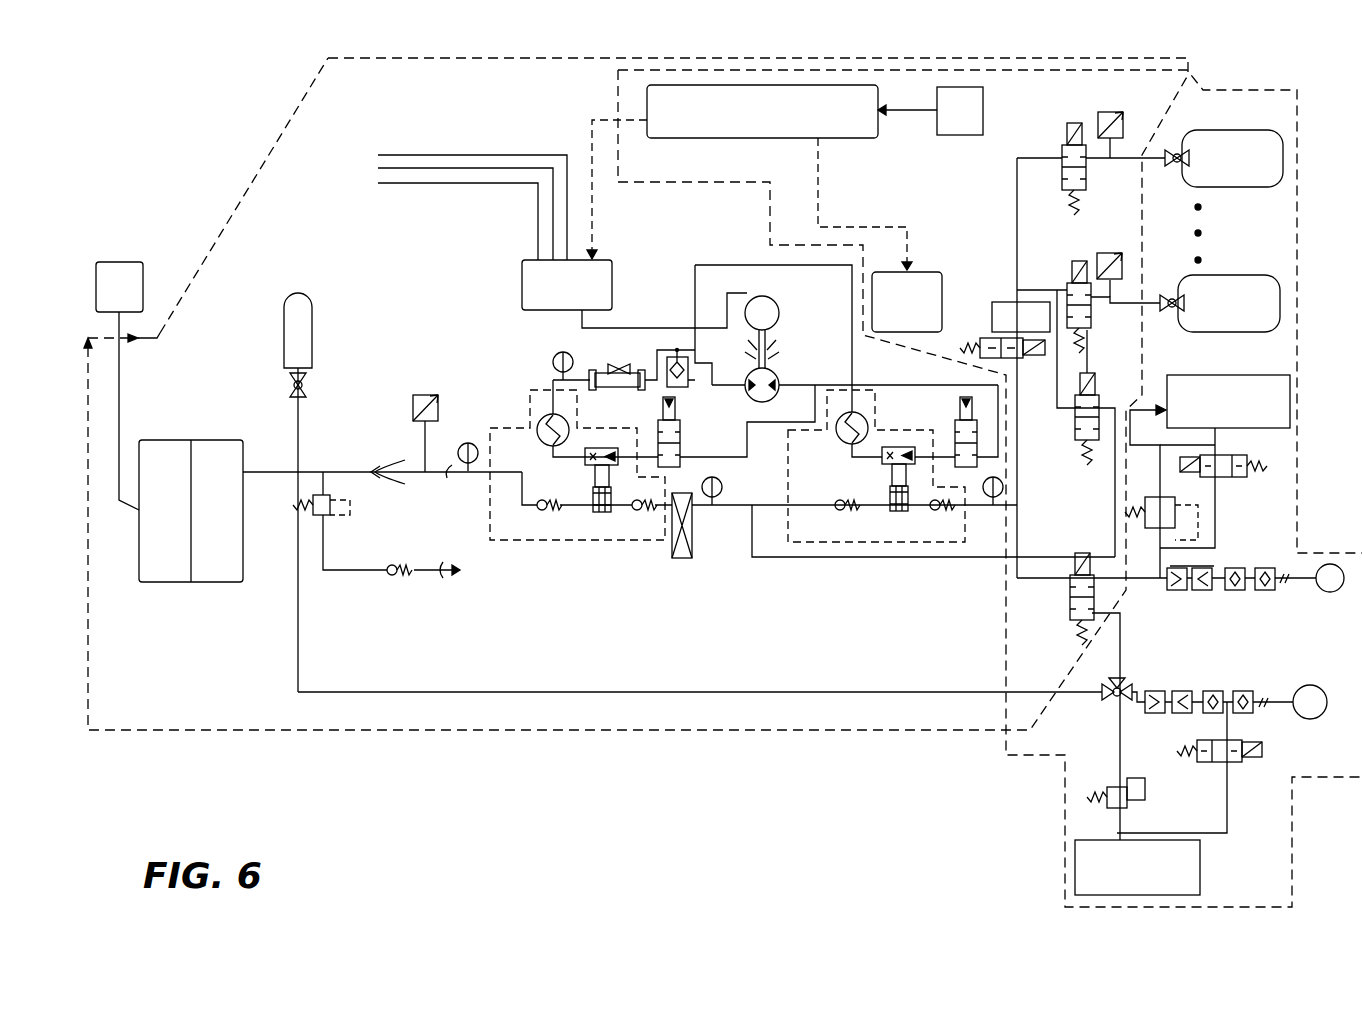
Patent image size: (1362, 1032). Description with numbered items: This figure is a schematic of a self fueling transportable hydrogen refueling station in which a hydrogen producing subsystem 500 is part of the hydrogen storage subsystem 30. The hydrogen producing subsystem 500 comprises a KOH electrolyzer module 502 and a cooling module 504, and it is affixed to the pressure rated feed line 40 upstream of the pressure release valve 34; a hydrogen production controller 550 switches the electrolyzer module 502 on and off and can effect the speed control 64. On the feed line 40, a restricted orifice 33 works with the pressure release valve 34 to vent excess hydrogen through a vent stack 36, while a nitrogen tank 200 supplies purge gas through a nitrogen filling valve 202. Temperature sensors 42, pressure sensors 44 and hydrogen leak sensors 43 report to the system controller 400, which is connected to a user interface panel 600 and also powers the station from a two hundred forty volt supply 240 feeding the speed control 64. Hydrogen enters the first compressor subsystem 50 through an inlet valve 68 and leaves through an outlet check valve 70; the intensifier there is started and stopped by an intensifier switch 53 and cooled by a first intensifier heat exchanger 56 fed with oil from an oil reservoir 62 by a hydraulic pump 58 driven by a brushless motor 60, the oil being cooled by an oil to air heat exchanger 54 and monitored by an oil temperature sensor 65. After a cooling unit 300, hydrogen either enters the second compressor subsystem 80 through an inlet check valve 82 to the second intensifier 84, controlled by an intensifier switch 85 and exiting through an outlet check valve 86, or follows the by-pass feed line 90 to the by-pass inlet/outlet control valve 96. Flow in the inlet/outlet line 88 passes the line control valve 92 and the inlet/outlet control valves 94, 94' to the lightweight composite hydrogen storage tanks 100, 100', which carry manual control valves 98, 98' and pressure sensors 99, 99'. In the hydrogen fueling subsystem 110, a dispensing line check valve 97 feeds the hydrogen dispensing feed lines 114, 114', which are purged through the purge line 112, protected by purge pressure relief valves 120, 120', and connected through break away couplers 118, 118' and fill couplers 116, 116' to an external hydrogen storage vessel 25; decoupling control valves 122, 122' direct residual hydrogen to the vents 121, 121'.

The hydrogen storage subsystem 30 is at (320, 733).
The hydrogen fueling subsystem 110 is at (727, 182).
The system controller 400 is at (647, 102).
The user interface panel 600 is at (930, 111).
The speed control 64 is at (522, 287).
The 240 VAC power supply 240 is at (451, 201).
The hydrogen leak sensor 43 is at (940, 272).
The brushless motor 60 is at (770, 298).
The hydraulic pump 58 is at (780, 372).
The oil temperature sensor 65 is at (553, 362).
The oil to air heat exchanger 54 is at (597, 375).
The oil reservoir 62 is at (688, 387).
The intensifier switch 53 is at (682, 452).
The first intensifier heat exchanger 56 is at (541, 418).
The first compressor subsystem 50 is at (578, 540).
The outlet check valve 70 is at (637, 515).
The inlet valve 68 is at (538, 510).
The cooling unit 300 is at (690, 545).
The temperature sensor 42 is at (467, 443).
The by-pass feed line 90 is at (770, 558).
The second compressor subsystem 80 is at (893, 545).
The second intensifier 84 is at (900, 447).
The intensifier switch 85 is at (955, 430).
The inlet check valve 82 is at (835, 503).
The outlet check valve 86 is at (934, 515).
The inlet/outlet line 88 is at (1019, 413).
The line control valve 92 is at (980, 340).
The inlet/outlet control valve 94 is at (1091, 154).
The pressure sensor 99 is at (1096, 120).
The manual control valve 98 is at (1171, 188).
The lightweight composite hydrogen storage tank 100 is at (1254, 127).
The lightweight composite hydrogen storage tank 100' is at (1230, 271).
The inlet/outlet control valve 94' is at (1088, 392).
The pressure sensor 99' is at (1116, 244).
The manual control valve 98' is at (1167, 328).
The by-pass inlet/outlet control valve 96 is at (1085, 370).
The dispensing line check valve 97 is at (1082, 553).
The vent 121 is at (1264, 401).
The purge pressure relief valve 120 is at (1161, 491).
The decoupling control valve 122 is at (1229, 488).
The hydrogen dispensing feed line 114 is at (1195, 593).
The break away coupler 118 is at (1215, 542).
The fill coupler 116 is at (1270, 541).
The external hydrogen storage vessel 25 is at (1318, 641).
The hydrogen dispensing feed line 114' is at (1146, 659).
The break away coupler 118' is at (1174, 681).
The fill coupler 116' is at (1264, 680).
The purge pressure relief valve 120' is at (1099, 767).
The decoupling control valve 122' is at (1189, 767).
The vent 121' is at (1176, 867).
The hydrogen production controller 550 is at (119, 386).
The hydrogen producing subsystem 500 is at (330, 544).
The KOH electrolyzer module 502 is at (169, 510).
The cooling module 504 is at (221, 501).
The nitrogen tank 200 is at (313, 338).
The nitrogen filling valve 202 is at (306, 388).
The purge line 112 is at (512, 695).
The pressure release valve 34 is at (318, 515).
The vent stack 36 is at (445, 577).
The restricted orifice 33 is at (393, 475).
The pressure rated feed line 40 is at (446, 478).
The pressure sensor 44 is at (427, 395).